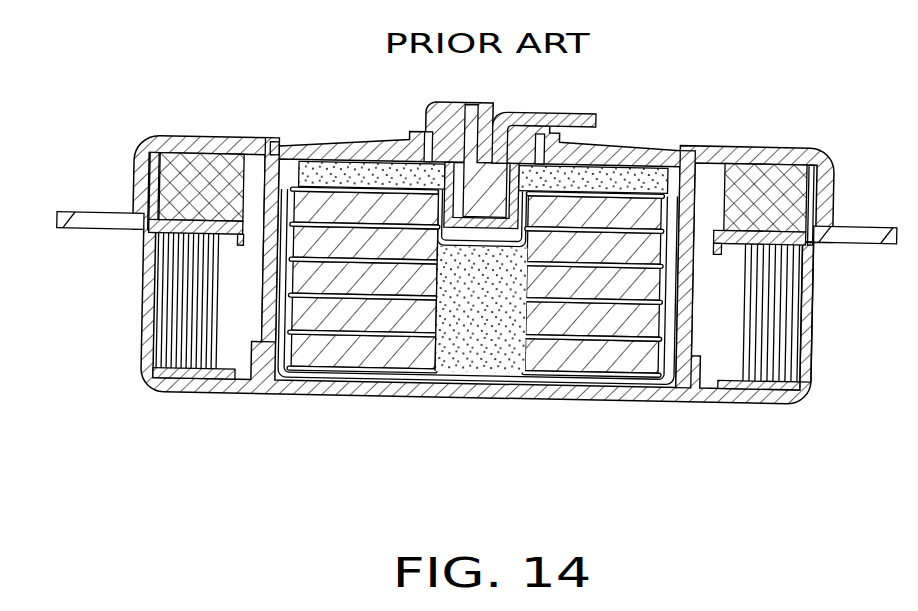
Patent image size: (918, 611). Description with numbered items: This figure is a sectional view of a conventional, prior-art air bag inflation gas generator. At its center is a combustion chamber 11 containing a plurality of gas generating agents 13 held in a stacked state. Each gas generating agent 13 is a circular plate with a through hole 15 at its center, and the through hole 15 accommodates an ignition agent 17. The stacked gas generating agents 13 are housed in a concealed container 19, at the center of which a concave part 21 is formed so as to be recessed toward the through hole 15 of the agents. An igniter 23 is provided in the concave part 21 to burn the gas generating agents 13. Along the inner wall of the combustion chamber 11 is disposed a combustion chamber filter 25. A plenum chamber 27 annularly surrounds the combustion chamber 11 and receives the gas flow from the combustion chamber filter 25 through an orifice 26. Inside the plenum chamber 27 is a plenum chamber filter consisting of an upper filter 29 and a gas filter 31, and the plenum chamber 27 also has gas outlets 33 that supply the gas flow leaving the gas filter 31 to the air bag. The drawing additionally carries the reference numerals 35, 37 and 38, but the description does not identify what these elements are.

The combustion chamber 11 is at (308, 347).
The gas generating agent 13 is at (320, 210).
The through hole 15 is at (440, 356).
The ignition agent 17 is at (500, 354).
The concealed container 19 is at (480, 385).
The concave part 21 is at (455, 212).
The igniter 23 is at (500, 180).
The combustion chamber filter 25 is at (680, 383).
The orifice 26 is at (263, 197).
The plenum chamber 27 is at (730, 359).
The upper filter 29 is at (757, 177).
The gas filter 31 is at (787, 327).
The gas outlets 33 is at (808, 306).
The electrode plate 35 is at (525, 357).
The gasket 37 is at (620, 186).
The seal 38 is at (269, 144).